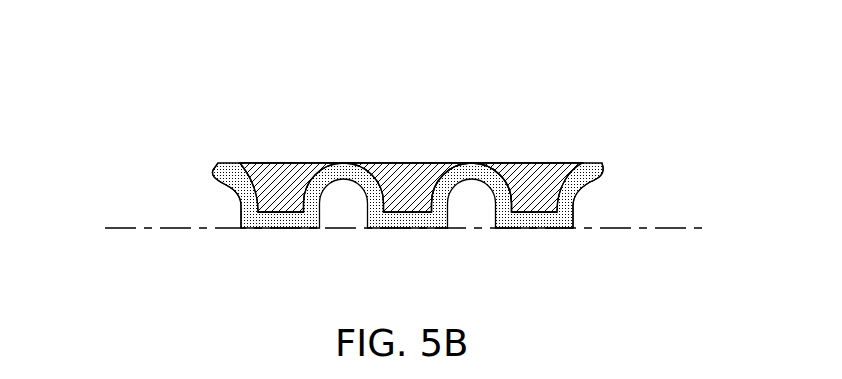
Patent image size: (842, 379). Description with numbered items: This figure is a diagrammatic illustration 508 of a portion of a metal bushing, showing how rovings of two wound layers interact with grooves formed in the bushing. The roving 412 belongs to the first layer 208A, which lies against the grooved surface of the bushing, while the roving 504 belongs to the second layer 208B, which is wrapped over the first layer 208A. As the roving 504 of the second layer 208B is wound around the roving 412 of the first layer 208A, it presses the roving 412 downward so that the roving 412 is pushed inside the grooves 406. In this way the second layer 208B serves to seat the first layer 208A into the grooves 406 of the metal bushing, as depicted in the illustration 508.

The diagrammatic illustration 508 is at (172, 82).
The roving of the second layer 504 is at (282, 161).
The roving of the first layer 412 is at (468, 162).
The first layer 208A is at (240, 205).
The second layer 208B is at (557, 162).
The grooves 406 is at (532, 202).